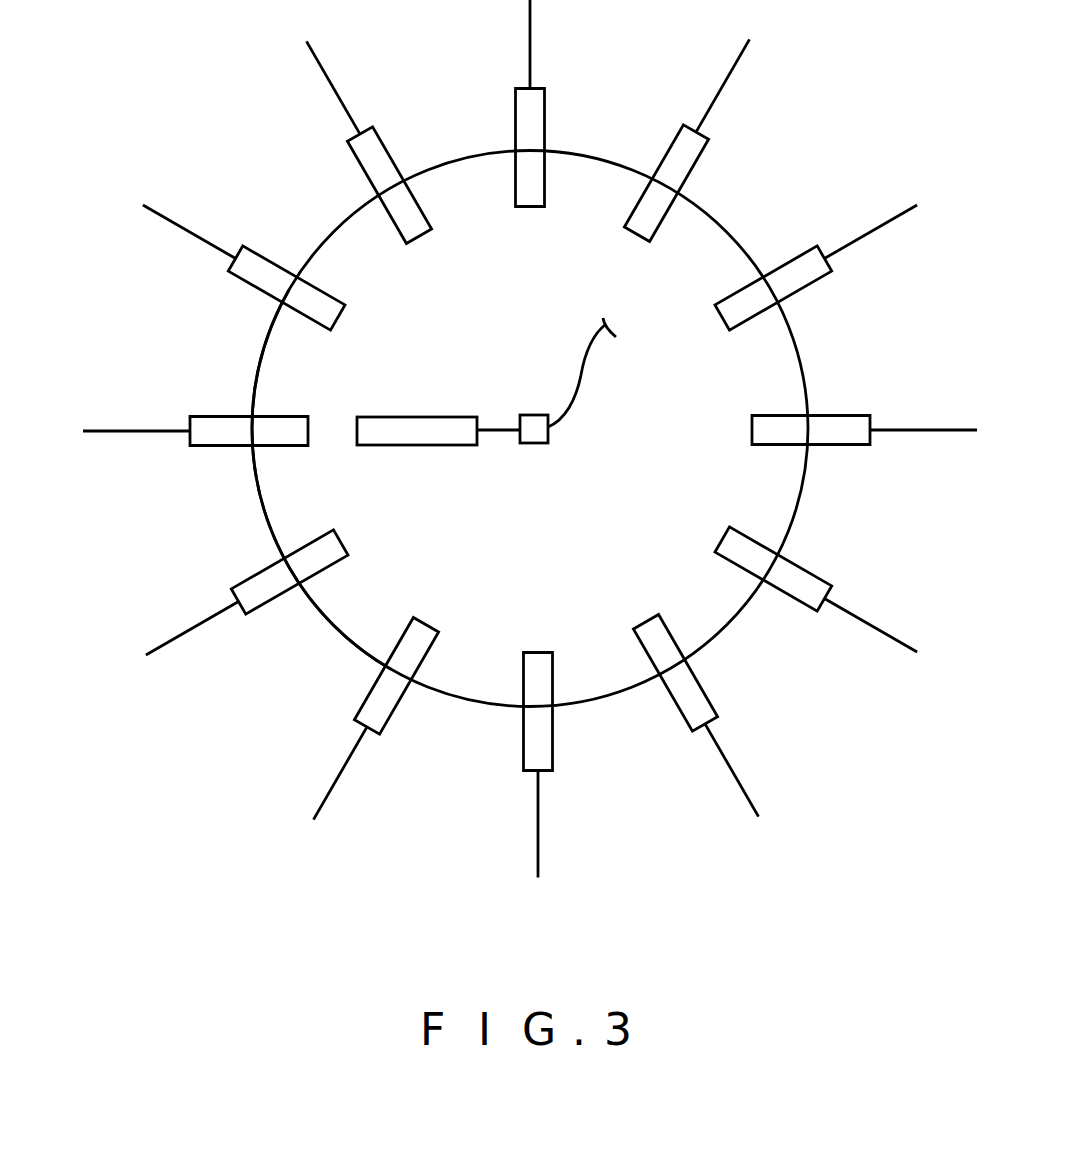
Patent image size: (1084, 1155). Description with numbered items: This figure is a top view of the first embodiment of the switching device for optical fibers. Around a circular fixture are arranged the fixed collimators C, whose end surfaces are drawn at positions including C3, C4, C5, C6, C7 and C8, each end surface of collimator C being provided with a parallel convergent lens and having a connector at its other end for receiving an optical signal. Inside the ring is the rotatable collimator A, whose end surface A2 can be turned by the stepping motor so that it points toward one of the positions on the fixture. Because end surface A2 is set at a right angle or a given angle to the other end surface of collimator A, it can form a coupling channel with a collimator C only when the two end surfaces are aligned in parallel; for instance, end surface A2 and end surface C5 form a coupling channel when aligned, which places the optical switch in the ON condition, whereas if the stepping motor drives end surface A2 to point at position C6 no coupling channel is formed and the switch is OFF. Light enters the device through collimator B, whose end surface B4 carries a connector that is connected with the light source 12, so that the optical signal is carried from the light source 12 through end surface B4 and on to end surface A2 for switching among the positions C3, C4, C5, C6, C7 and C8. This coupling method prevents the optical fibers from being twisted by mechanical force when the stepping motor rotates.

The connector position C3 is at (333, 315).
The connector position C4 is at (280, 367).
The end surface C5 is at (303, 430).
The position C6 is at (280, 512).
The connector position C7 is at (337, 550).
The connector position C8 is at (350, 615).
The end surface A2 is at (357, 438).
The end surface B4 is at (532, 418).
The light source 12 is at (588, 352).